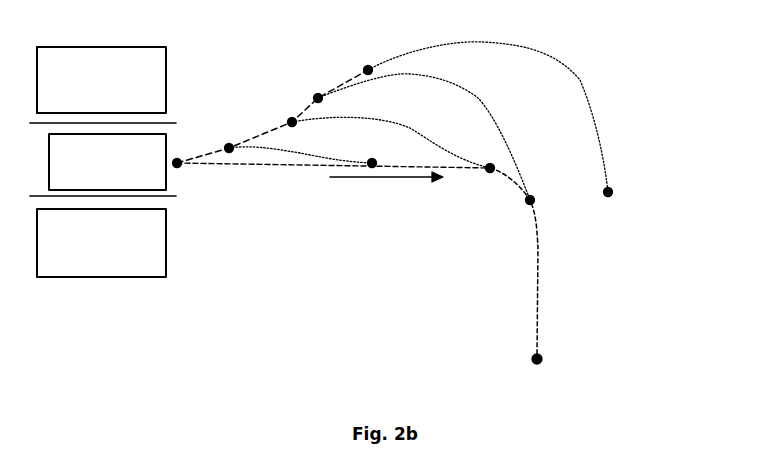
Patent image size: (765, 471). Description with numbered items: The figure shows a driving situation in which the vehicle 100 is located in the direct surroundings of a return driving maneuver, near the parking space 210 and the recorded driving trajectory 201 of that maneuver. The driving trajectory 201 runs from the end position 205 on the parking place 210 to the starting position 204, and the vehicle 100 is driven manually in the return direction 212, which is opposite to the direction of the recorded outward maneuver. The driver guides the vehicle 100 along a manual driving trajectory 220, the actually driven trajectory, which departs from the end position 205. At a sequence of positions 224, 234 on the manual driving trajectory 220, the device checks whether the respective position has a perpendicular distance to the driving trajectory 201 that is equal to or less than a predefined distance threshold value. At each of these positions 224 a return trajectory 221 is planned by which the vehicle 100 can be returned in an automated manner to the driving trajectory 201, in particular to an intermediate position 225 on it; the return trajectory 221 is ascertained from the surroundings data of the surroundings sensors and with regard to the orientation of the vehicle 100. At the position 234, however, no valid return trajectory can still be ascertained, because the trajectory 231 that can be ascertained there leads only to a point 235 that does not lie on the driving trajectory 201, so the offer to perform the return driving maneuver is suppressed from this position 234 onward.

The vehicle 100 is at (133, 172).
The parking space 210 is at (36, 193).
The driving trajectory 201 is at (540, 242).
The starting position 204 is at (541, 360).
The end position 205 is at (178, 167).
The return direction 212 is at (422, 180).
The manual driving trajectory 220 is at (254, 142).
The return trajectory 221 is at (457, 83).
The position 224 is at (317, 96).
The intermediate position 225 is at (372, 166).
The trajectory 231 is at (531, 47).
The position 234 is at (368, 69).
The point 235 is at (609, 190).